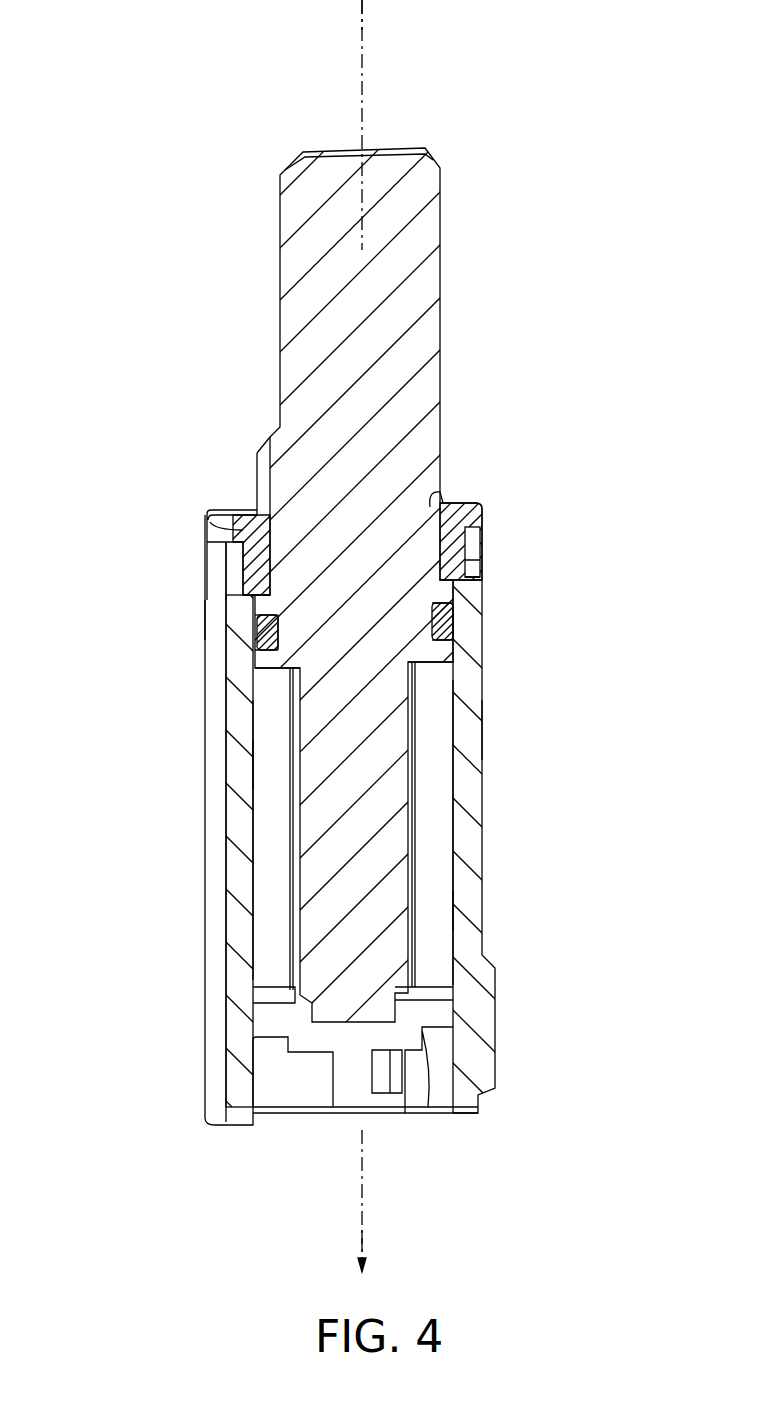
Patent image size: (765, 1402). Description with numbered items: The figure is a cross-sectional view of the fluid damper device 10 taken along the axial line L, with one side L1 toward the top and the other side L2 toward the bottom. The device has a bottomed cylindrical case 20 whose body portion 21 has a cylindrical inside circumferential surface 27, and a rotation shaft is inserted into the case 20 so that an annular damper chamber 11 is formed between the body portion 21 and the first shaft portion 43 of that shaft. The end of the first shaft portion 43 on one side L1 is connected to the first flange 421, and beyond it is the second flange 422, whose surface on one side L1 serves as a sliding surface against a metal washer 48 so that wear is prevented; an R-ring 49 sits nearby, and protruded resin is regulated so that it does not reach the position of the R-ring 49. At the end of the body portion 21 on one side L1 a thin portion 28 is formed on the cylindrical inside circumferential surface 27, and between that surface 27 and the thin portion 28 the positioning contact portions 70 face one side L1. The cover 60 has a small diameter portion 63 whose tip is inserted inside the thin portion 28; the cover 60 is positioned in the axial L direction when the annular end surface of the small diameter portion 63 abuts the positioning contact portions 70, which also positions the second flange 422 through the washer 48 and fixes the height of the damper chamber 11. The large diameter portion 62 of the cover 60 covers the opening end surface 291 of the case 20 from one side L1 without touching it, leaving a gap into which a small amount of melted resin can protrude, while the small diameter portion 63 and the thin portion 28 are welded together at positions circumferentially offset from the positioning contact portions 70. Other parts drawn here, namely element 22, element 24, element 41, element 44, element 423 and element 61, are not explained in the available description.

The axial line L is at (364, 68).
The one side in the axial direction L1 is at (364, 10).
The other side in the axial direction L2 is at (364, 1245).
The fluid damper device 10 is at (131, 200).
The case 20 is at (503, 741).
The body portion 21 is at (483, 875).
The bottom member 22 is at (422, 1028).
The support member 24 is at (345, 1022).
The cylindrical inside circumferential surface 27 is at (265, 768).
The thin portion 28 is at (207, 552).
The opening end surface 291 is at (230, 512).
The annular damper chamber 11 is at (286, 849).
The piezoelectric element 41 is at (372, 1070).
The first shaft portion 43 is at (415, 772).
The rod 44 is at (441, 233).
The first flange 421 is at (265, 690).
The second flange 422 is at (256, 612).
The groove lower wall 423 is at (262, 655).
The R-ring 49 is at (262, 632).
The washer 48 is at (480, 568).
The cover 60 is at (476, 483).
The seal lip 61 is at (440, 500).
The large diameter portion 62 is at (482, 505).
The small diameter portion 63 is at (470, 550).
The positioning contact portions 70 is at (245, 578).